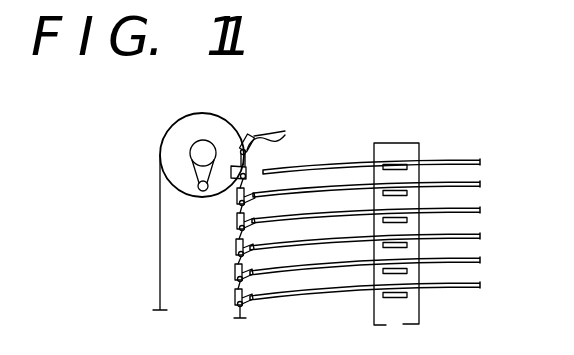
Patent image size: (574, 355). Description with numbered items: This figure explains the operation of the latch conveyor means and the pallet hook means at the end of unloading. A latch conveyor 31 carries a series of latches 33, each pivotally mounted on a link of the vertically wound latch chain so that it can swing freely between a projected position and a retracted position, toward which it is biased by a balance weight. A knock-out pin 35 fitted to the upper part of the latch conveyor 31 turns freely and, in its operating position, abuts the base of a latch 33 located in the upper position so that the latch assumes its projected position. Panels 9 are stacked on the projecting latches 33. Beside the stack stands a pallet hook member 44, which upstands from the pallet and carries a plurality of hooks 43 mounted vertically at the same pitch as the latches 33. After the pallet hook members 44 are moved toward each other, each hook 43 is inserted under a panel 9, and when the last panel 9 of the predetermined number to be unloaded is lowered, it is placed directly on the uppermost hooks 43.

The panel 9 is at (328, 182).
The latch conveyor 31 is at (156, 129).
The latch 33 is at (262, 217).
The knock-out pin 35 is at (203, 192).
The hook 43 is at (408, 272).
The pallet hook member 44 is at (401, 140).